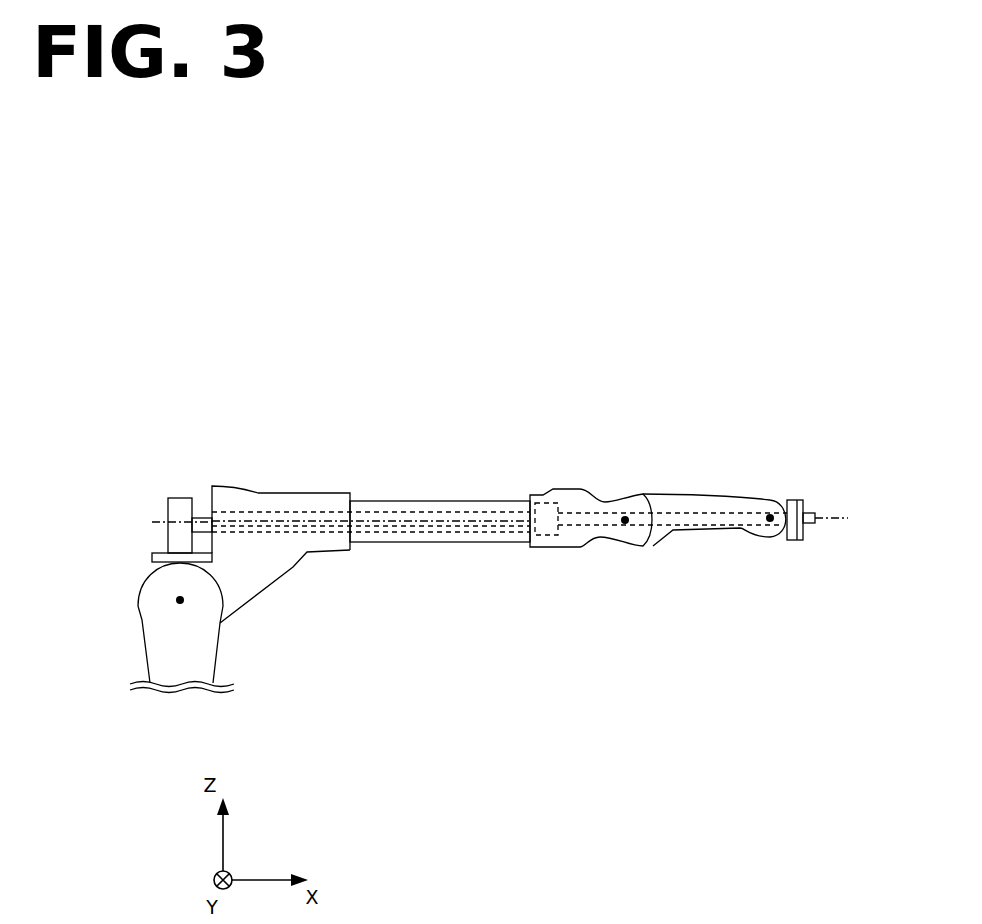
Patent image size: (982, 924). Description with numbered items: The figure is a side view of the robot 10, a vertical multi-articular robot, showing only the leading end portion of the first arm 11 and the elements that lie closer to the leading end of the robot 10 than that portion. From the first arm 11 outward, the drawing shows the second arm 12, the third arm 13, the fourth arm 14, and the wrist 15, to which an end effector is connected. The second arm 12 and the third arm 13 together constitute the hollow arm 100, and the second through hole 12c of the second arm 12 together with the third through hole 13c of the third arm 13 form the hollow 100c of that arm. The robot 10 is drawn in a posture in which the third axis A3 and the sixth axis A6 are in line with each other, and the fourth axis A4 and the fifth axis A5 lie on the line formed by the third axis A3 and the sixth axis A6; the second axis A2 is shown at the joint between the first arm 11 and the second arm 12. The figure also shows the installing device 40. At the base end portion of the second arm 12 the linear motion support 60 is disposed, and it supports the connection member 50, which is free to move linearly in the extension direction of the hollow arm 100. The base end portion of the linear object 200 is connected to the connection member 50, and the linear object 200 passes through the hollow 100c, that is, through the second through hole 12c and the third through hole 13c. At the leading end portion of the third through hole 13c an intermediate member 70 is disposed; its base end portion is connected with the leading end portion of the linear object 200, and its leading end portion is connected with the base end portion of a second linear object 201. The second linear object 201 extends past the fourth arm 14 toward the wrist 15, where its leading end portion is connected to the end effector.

The robot 10 is at (458, 351).
The first arm 11 is at (168, 664).
The second arm 12 is at (268, 507).
The second through hole 12c is at (320, 550).
The third arm 13 is at (474, 505).
The third through hole 13c is at (450, 543).
The fourth arm 14 is at (680, 502).
The wrist 15 is at (800, 500).
The installing device 40 is at (67, 427).
The connection member 50 is at (180, 503).
The linear motion support 60 is at (153, 553).
The intermediate member 70 is at (550, 500).
The hollow arm 100 is at (507, 420).
The hollow 100c is at (312, 623).
The linear object 200 is at (198, 532).
The second linear object 201 is at (657, 550).
The second axis A2 is at (180, 600).
The third axis A3 is at (365, 510).
The fourth axis A4 is at (625, 520).
The fifth axis A5 is at (770, 518).
The sixth axis A6 is at (830, 517).